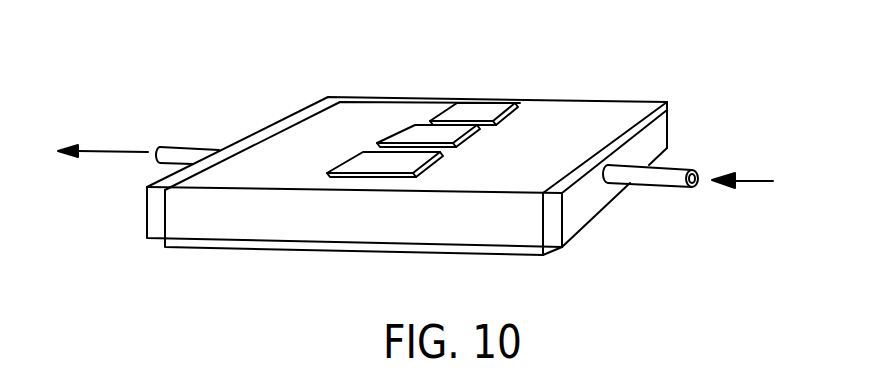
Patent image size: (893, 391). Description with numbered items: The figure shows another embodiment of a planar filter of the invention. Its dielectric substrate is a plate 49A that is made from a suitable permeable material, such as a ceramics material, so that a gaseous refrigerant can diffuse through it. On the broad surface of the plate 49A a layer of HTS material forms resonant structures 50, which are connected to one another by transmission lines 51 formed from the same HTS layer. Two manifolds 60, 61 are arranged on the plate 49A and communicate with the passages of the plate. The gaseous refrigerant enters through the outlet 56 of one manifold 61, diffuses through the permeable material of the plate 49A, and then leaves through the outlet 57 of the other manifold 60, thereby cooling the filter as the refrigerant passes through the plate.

The plate 49A is at (588, 120).
The resonant structures 50 is at (467, 110).
The transmission lines 51 is at (333, 181).
The outlet of manifold 56 is at (645, 180).
The outlet of manifold 57 is at (185, 157).
The manifold 60 is at (268, 126).
The manifold 61 is at (658, 140).